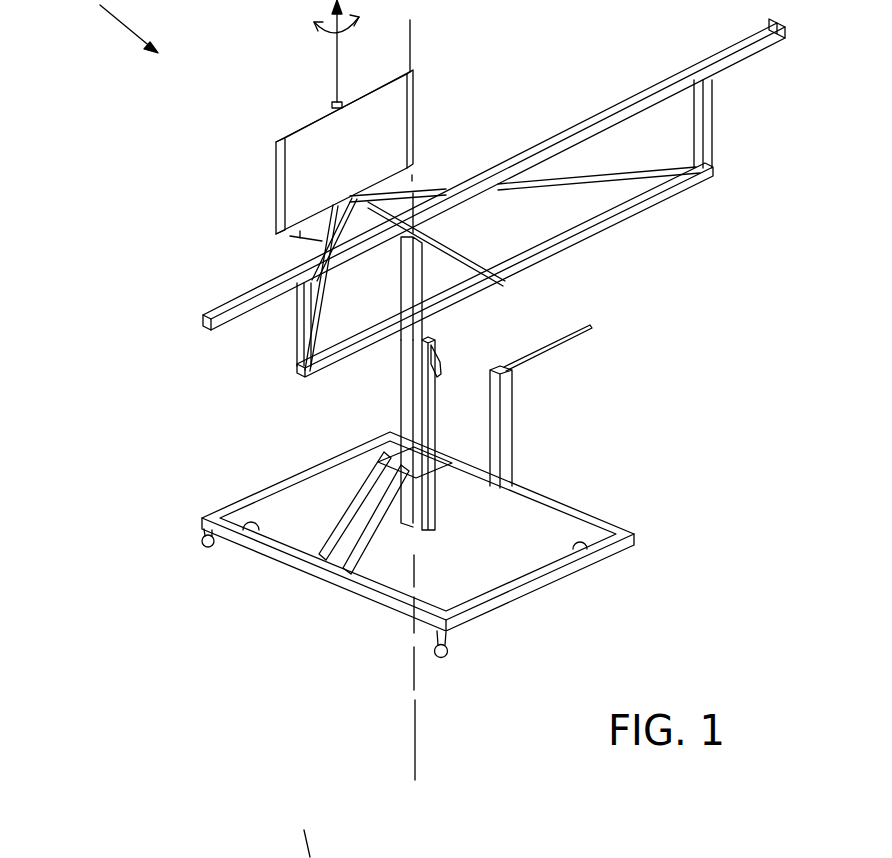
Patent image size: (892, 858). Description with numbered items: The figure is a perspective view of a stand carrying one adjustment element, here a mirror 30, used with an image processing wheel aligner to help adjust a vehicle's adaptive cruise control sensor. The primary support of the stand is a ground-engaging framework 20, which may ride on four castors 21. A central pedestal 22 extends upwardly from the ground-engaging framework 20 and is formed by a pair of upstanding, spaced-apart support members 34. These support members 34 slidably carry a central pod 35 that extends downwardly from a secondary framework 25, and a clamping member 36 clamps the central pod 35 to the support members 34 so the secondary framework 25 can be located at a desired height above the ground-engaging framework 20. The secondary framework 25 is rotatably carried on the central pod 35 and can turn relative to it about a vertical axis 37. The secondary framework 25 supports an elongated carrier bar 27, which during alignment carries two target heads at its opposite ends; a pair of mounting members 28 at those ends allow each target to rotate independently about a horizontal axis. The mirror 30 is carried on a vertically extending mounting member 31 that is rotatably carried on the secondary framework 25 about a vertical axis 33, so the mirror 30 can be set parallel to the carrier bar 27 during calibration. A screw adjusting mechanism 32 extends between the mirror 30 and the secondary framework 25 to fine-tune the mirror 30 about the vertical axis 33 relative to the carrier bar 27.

The ground-engaging framework 20 is at (603, 523).
The castors 21 is at (386, 462).
The central pedestal 22 is at (428, 422).
The secondary framework 25 is at (588, 234).
The carrier bar 27 is at (627, 107).
The mounting members 28 is at (783, 40).
The mirror 30 is at (395, 103).
The mounting member 31 is at (337, 103).
The screw adjusting mechanism 32 is at (300, 235).
The vertical axis 33 is at (337, 50).
The support members 34 is at (397, 402).
The central pod 35 is at (423, 270).
The clamping member 36 is at (442, 364).
The vertical axis 37 is at (410, 33).